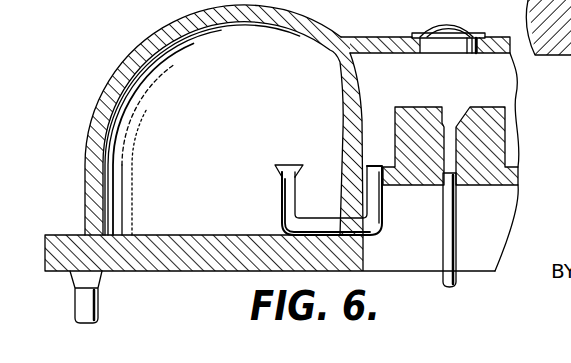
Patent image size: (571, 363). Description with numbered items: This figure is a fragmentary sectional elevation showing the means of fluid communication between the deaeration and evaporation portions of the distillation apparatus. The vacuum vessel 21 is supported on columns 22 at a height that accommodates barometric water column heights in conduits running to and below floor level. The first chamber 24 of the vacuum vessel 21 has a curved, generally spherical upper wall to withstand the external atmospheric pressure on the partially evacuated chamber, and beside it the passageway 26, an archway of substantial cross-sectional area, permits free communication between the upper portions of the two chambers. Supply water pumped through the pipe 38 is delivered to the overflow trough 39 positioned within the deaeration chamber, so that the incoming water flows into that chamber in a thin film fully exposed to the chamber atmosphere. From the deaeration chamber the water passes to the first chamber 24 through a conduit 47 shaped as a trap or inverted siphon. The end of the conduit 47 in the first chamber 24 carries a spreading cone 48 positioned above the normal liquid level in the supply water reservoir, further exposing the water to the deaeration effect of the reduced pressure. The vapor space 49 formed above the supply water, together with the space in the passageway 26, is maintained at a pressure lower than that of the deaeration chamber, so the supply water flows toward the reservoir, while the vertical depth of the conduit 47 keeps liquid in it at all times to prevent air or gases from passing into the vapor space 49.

The vacuum vessel 21 is at (89, 128).
The column 22 is at (93, 297).
The first chamber 24 is at (122, 80).
The passageway 26 is at (378, 45).
The pipe 38 is at (453, 228).
The overflow trough 39 is at (467, 110).
The conduit 47 is at (287, 203).
The spreading cone 48 is at (283, 163).
The vapor space 49 is at (216, 90).